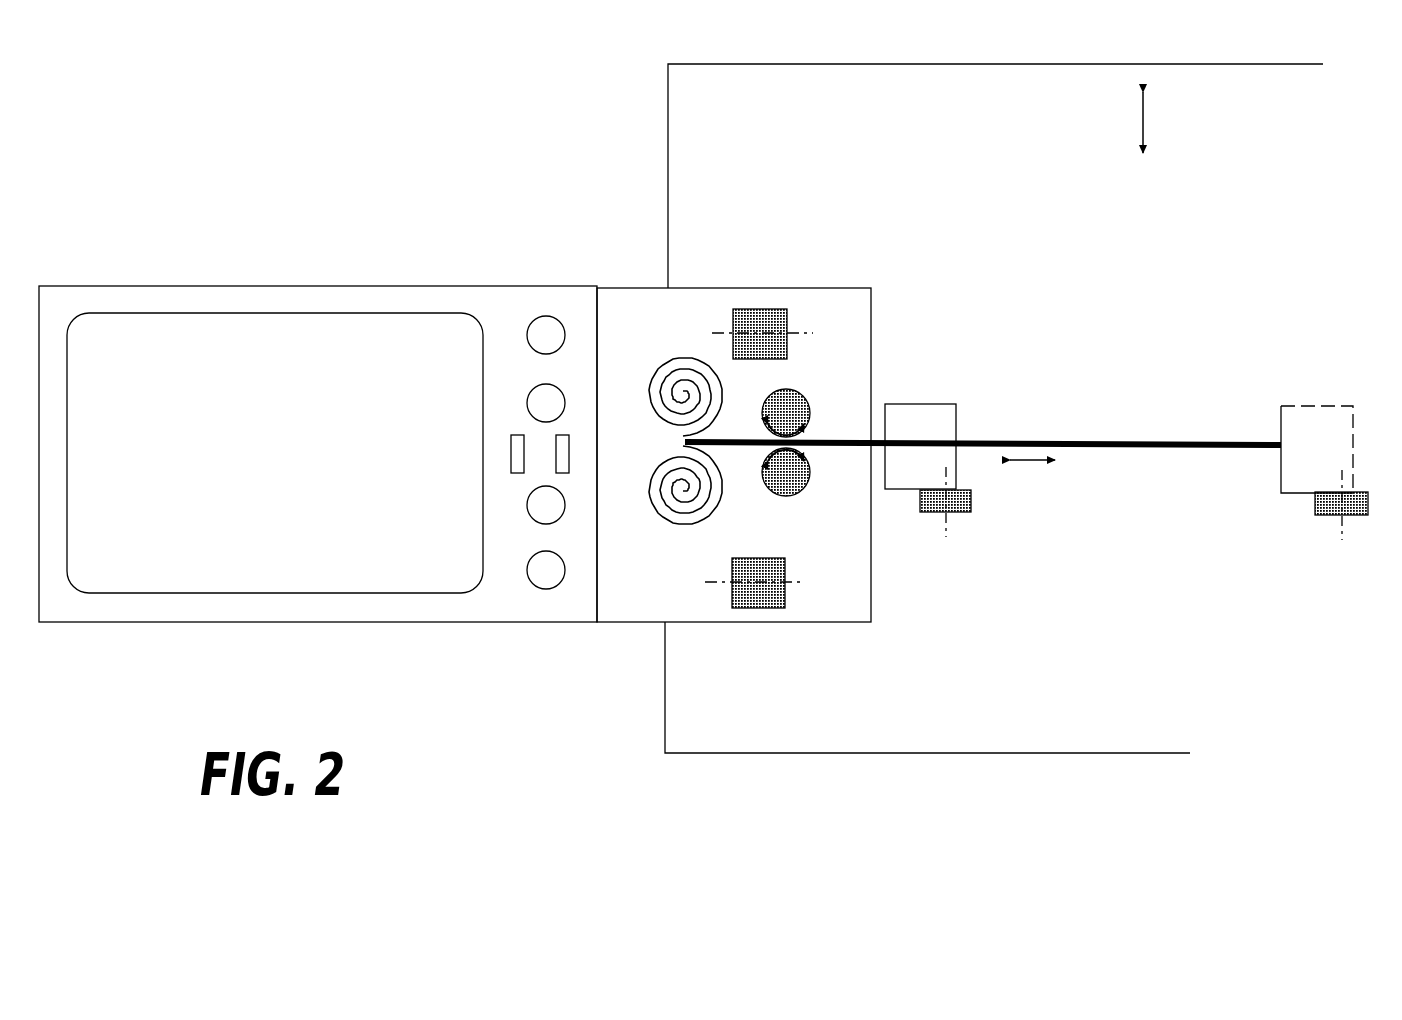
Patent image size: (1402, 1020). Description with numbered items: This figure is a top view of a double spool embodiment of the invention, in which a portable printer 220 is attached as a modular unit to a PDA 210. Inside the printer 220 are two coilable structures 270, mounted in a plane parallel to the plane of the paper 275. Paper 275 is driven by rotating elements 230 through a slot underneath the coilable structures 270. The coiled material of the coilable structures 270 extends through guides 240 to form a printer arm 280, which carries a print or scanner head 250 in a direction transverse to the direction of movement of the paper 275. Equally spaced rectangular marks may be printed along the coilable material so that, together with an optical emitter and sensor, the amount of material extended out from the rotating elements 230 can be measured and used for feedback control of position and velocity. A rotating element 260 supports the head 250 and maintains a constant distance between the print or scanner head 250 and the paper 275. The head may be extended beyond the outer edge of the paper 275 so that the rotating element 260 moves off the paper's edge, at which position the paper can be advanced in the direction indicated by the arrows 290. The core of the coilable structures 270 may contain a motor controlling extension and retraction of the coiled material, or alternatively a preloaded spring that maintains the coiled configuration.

The PDA 210 is at (372, 284).
The portable printer 220 is at (640, 286).
The rotating elements 230 is at (760, 309).
The guides 240 is at (795, 493).
The print or scanner head 250 is at (930, 404).
The rotating element 260 is at (958, 512).
The coilable structures 270 is at (676, 530).
The paper 275 is at (668, 160).
The printer arm 280 is at (1130, 440).
The arrows 290 is at (1140, 125).